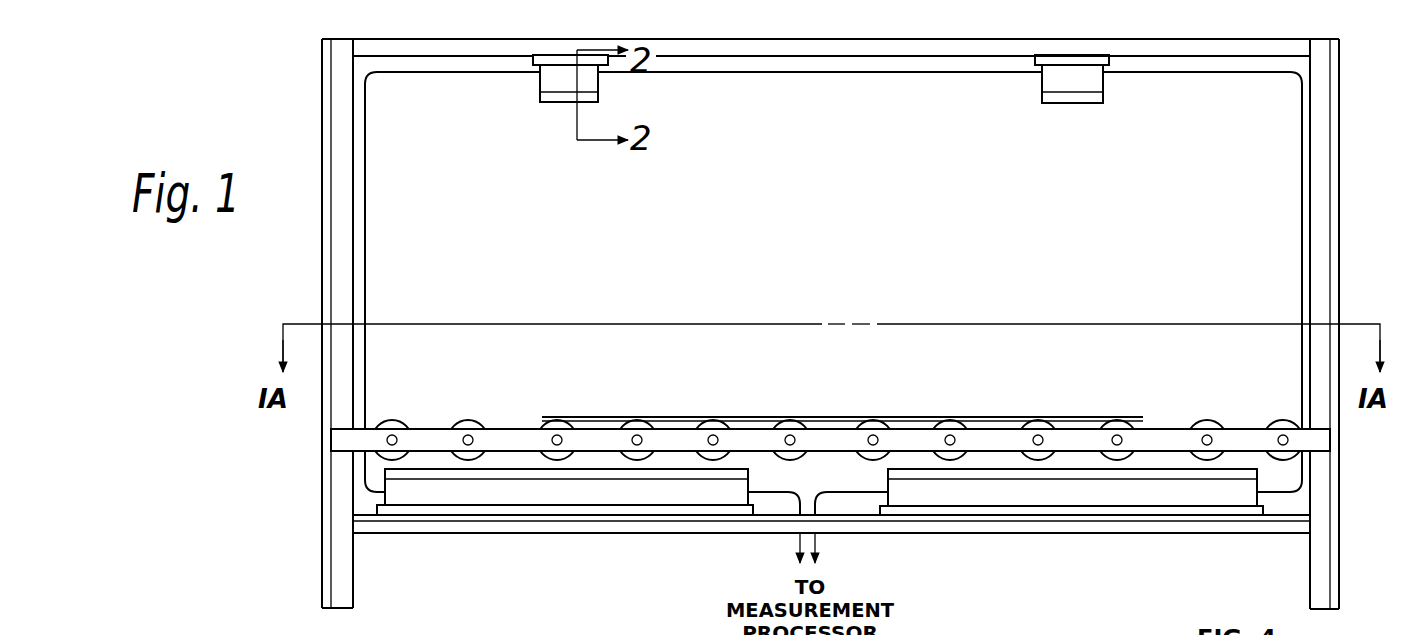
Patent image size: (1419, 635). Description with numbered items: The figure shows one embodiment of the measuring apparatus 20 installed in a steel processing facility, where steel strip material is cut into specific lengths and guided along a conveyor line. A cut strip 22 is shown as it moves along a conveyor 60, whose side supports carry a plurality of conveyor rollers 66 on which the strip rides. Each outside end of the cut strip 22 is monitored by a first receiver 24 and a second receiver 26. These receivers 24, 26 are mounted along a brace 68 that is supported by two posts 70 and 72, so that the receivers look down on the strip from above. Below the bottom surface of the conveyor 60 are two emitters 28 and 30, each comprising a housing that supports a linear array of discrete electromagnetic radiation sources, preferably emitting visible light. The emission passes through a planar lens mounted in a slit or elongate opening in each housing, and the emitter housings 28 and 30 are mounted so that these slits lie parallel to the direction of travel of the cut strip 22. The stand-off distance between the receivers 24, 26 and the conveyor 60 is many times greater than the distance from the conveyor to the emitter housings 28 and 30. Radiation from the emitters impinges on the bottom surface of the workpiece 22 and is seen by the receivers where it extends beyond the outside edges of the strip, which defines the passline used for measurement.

The apparatus 20 is at (1342, 280).
The cut strip 22 is at (597, 417).
The first receiver 24 is at (552, 80).
The second receiver 26 is at (1055, 81).
The emitter 28 is at (967, 493).
The emitter 30 is at (440, 492).
The conveyor 60 is at (455, 429).
The conveyor rollers 66 is at (717, 422).
The brace 68 is at (840, 57).
The post 70 is at (342, 275).
The post 72 is at (1318, 370).